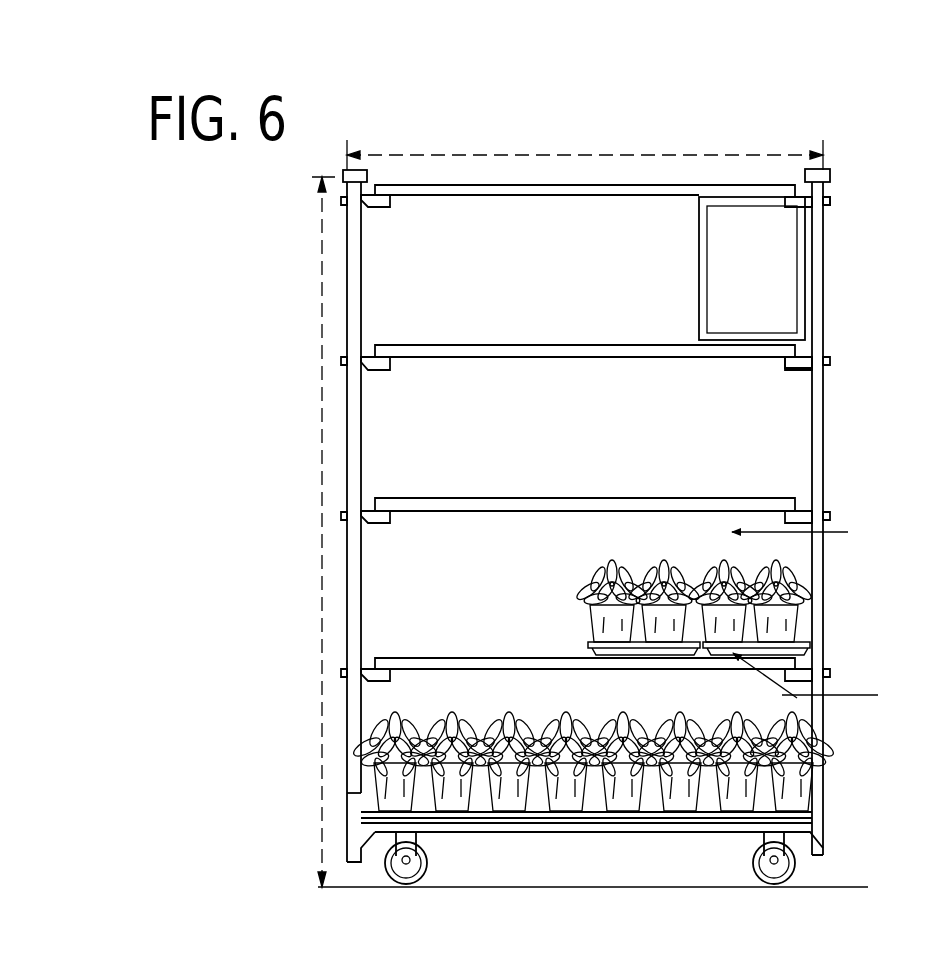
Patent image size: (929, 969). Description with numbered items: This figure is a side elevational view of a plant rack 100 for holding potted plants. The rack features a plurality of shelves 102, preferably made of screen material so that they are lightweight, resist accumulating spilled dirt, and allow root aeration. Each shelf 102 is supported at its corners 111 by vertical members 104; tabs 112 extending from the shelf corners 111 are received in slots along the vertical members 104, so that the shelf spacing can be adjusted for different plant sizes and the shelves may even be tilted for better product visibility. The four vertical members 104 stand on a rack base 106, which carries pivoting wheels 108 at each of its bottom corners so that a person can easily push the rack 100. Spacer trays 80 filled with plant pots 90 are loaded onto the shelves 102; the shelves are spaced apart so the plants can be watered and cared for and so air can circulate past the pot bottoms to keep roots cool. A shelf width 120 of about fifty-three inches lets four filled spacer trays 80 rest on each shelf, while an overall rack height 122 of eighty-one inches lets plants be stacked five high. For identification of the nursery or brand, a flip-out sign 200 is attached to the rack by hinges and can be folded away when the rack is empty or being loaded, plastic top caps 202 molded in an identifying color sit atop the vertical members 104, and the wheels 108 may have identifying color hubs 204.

The plant rack 100 is at (635, 484).
The spacer tray 80 is at (812, 772).
The plant pot 90 is at (812, 615).
The shelf 102 is at (770, 497).
The vertical member 104 is at (825, 402).
The rack base 106 is at (823, 812).
The pivoting wheel 108 is at (795, 873).
The corner of shelf 111 is at (802, 497).
The tab 112 is at (830, 357).
The shelf width 120 is at (585, 148).
The overall rack height 122 is at (569, 532).
The flip-out sign 200 is at (772, 245).
The plastic top cap 202 is at (822, 172).
The identifying color hub 204 is at (786, 862).